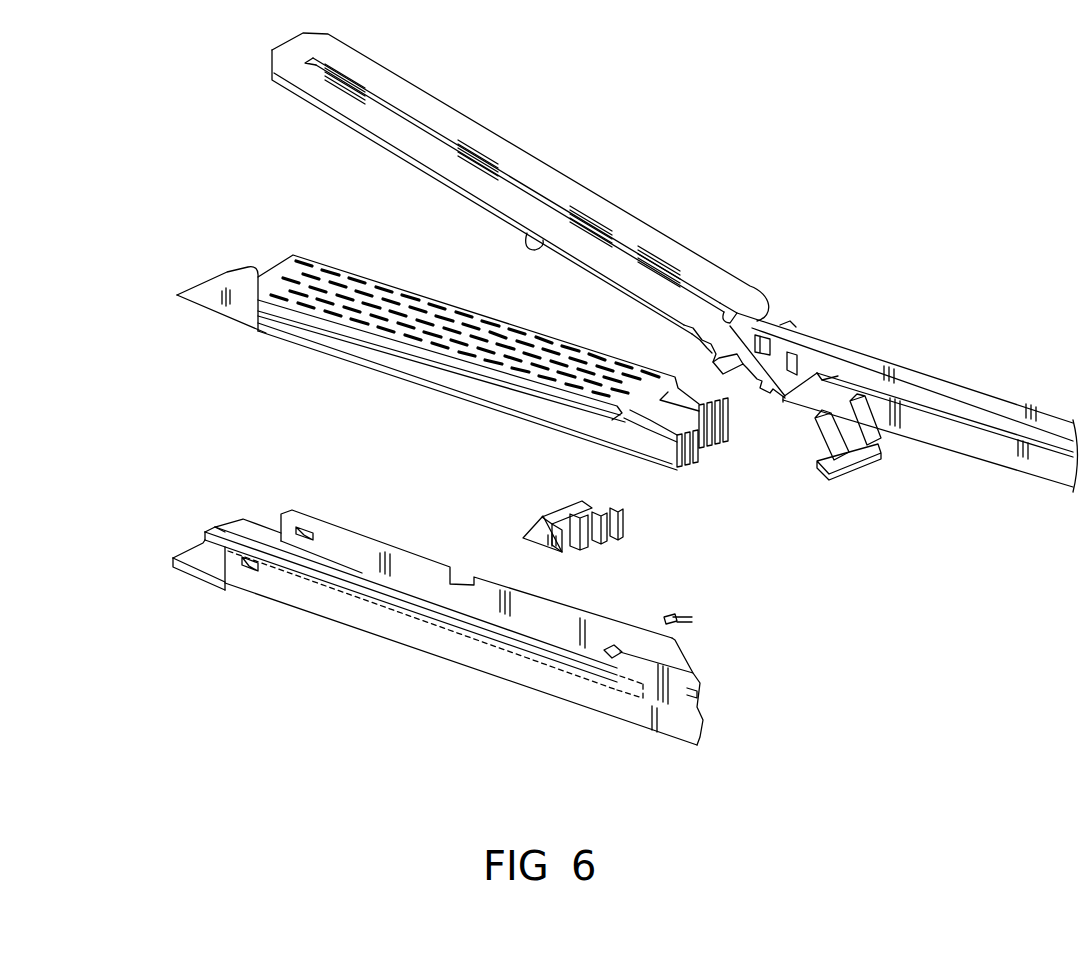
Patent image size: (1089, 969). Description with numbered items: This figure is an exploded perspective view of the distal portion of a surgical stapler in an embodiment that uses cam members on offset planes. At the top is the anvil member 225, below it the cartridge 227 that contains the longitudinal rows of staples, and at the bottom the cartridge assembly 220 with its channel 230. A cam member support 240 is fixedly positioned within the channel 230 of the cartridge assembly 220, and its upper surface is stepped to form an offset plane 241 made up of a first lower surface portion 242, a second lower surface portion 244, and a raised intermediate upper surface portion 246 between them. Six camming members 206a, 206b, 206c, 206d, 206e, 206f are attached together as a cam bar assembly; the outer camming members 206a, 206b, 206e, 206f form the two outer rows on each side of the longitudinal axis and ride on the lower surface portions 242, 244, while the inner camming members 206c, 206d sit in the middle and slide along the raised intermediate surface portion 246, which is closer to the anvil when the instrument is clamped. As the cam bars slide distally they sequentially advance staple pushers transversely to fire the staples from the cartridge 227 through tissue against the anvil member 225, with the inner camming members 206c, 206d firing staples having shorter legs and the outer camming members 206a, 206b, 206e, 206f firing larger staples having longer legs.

The anvil member 225 is at (533, 236).
The cartridge 227 is at (378, 357).
The cartridge assembly 220 is at (381, 626).
The channel 230 is at (367, 552).
The cam member support 240 is at (215, 570).
The offset plane 241 is at (188, 538).
The first lower surface portion 242 is at (195, 558).
The second lower surface portion 244 is at (253, 522).
The intermediate upper surface portion 246 is at (220, 530).
The camming member 206a is at (560, 552).
The camming member 206b is at (583, 548).
The camming member 206c is at (547, 517).
The camming member 206d is at (550, 522).
The camming member 206e is at (607, 537).
The camming member 206f is at (613, 520).